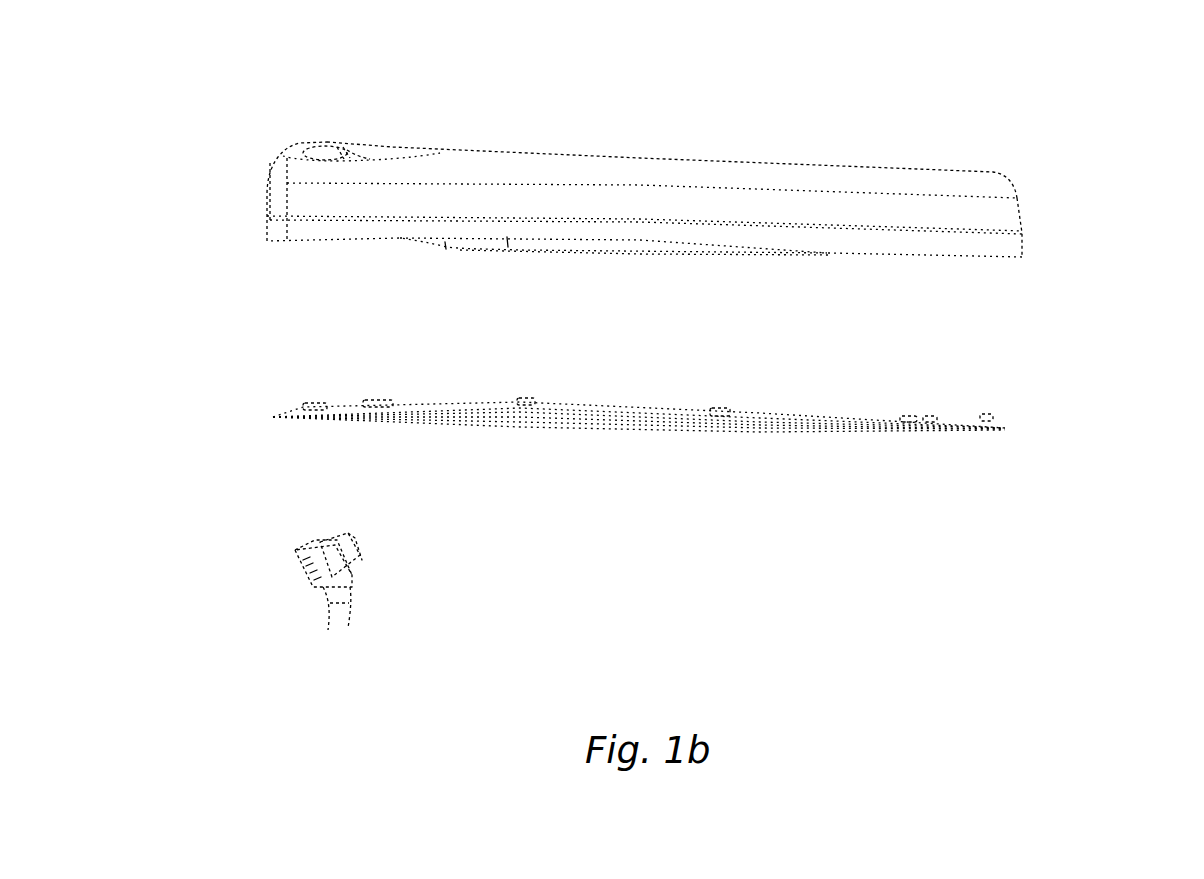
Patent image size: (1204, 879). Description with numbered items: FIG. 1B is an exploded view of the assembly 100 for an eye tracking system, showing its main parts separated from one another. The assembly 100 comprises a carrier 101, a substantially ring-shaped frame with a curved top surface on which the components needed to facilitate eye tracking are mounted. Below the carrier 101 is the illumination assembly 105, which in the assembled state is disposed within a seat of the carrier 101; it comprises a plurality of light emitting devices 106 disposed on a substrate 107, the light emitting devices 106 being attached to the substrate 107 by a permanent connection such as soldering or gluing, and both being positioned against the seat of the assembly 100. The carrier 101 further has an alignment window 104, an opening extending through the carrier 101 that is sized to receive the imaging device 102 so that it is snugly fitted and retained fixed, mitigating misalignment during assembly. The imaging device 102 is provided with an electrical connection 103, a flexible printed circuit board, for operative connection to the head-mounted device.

The assembly 100 is at (1042, 165).
The carrier 101 is at (266, 178).
The imaging device 102 is at (361, 548).
The electrical connection 103 is at (350, 615).
The alignment window 104 is at (347, 148).
The illumination assembly 105 is at (268, 416).
The light emitting devices 106 is at (530, 399).
The substrate 107 is at (810, 416).